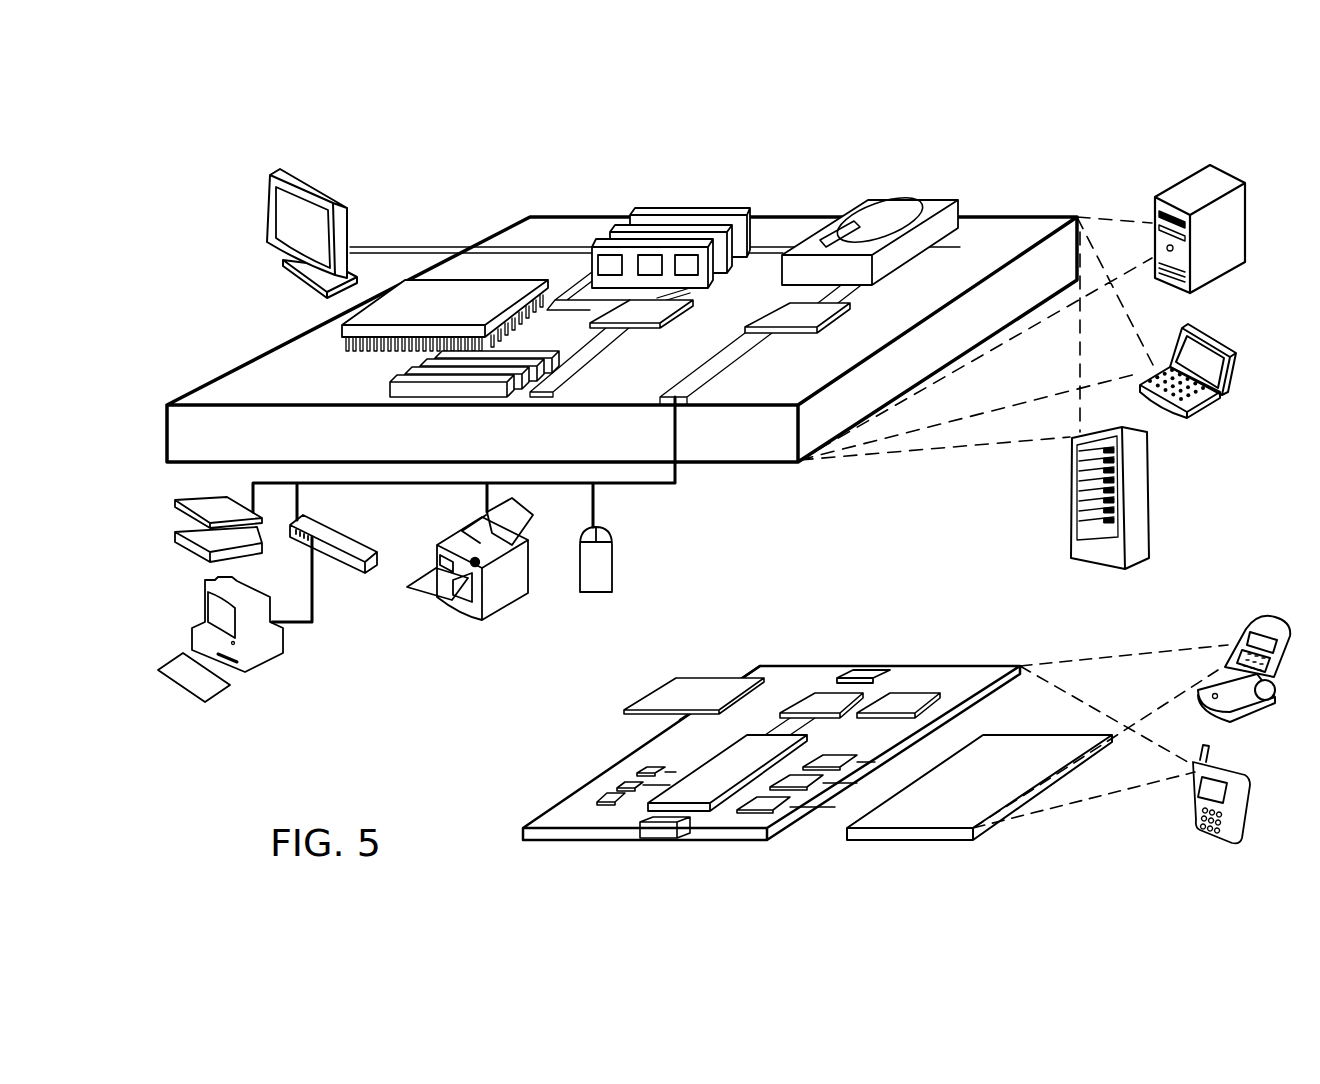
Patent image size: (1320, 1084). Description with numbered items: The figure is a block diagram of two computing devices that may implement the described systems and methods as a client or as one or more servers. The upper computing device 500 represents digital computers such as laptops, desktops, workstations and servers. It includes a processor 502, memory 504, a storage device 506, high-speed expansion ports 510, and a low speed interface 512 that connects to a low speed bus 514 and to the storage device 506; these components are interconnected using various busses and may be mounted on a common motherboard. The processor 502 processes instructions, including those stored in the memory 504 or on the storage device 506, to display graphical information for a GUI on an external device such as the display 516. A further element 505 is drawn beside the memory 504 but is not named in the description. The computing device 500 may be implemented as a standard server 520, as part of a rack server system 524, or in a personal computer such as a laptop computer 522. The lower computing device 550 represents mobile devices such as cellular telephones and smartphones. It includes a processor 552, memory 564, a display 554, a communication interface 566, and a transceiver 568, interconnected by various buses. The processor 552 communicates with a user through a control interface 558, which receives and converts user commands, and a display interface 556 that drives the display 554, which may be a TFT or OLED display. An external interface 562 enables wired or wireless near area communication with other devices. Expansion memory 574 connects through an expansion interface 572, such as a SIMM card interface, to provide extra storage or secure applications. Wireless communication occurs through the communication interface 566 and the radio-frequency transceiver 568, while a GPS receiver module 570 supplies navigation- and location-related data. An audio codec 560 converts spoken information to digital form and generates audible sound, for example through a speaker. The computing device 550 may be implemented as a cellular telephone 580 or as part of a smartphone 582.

The computing device 500 is at (498, 192).
The processor 502 is at (348, 332).
The memory 504 is at (658, 212).
The memory bus / socket 505 is at (628, 214).
The storage device 506 is at (871, 201).
The high-speed expansion ports 510 is at (398, 375).
The low speed interface 512 is at (786, 320).
The low speed bus 514 is at (686, 410).
The display 516 is at (273, 173).
The standard server 520 is at (1166, 192).
The laptop computer 522 is at (1194, 413).
The rack server system 524 is at (1070, 531).
The computing device 550 is at (598, 727).
The processor 552 is at (705, 805).
The display 554 is at (950, 805).
The display interface 556 is at (758, 810).
The control interface 558 is at (797, 788).
The audio codec 560 is at (834, 768).
The external interface 562 is at (661, 828).
The memory 564 is at (612, 791).
The communication interface 566 is at (815, 702).
The transceiver 568 is at (905, 703).
The GPS receiver module 570 is at (878, 677).
The expansion interface 572 is at (753, 680).
The expansion memory 574 is at (660, 687).
The cellular telephone 580 is at (1250, 627).
The smartphone 582 is at (1195, 815).